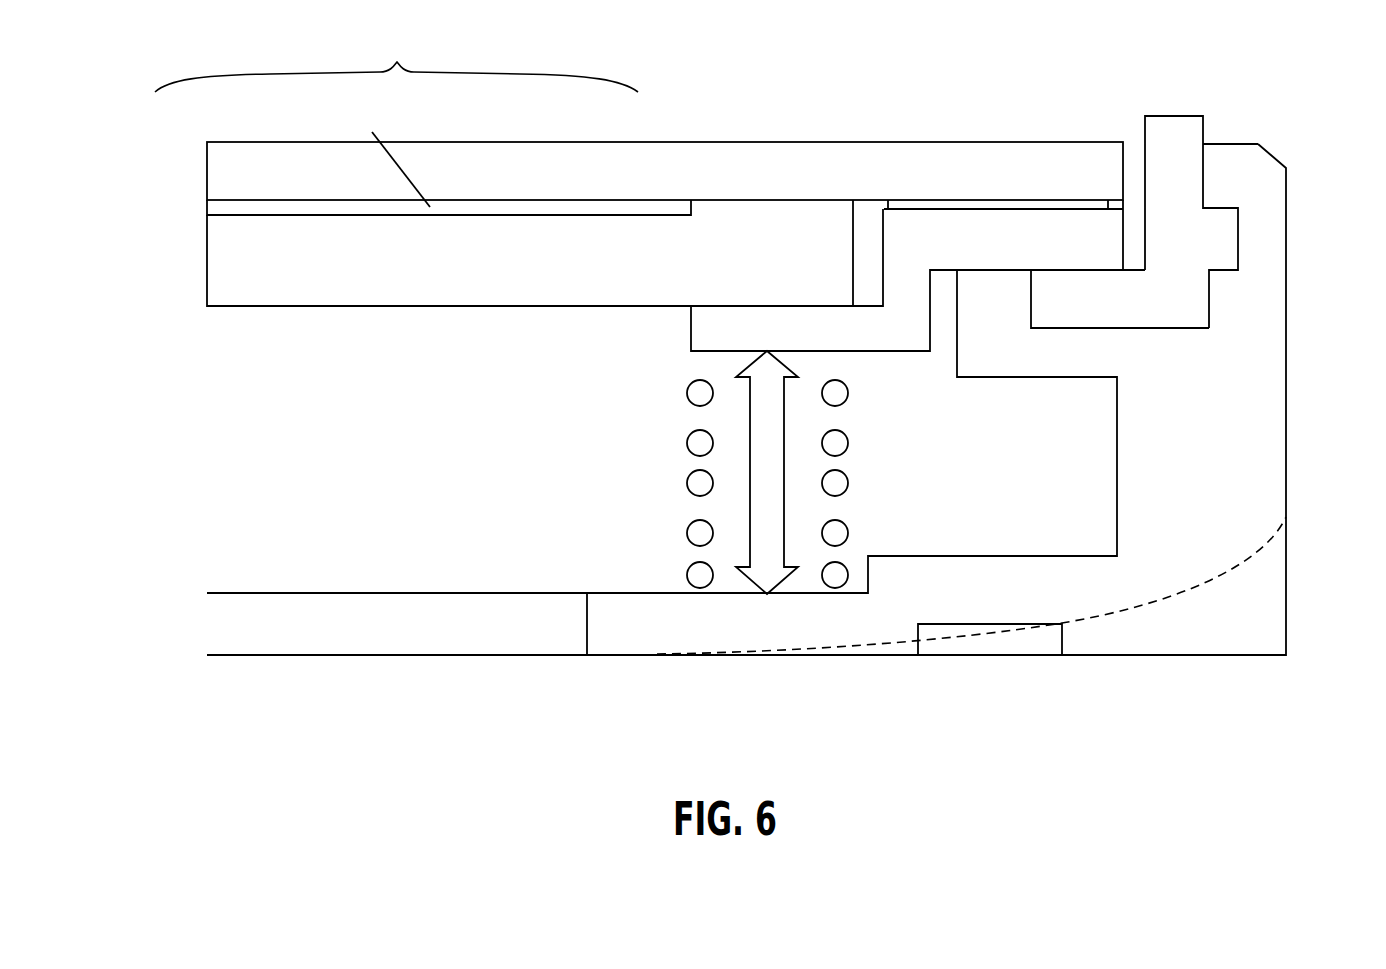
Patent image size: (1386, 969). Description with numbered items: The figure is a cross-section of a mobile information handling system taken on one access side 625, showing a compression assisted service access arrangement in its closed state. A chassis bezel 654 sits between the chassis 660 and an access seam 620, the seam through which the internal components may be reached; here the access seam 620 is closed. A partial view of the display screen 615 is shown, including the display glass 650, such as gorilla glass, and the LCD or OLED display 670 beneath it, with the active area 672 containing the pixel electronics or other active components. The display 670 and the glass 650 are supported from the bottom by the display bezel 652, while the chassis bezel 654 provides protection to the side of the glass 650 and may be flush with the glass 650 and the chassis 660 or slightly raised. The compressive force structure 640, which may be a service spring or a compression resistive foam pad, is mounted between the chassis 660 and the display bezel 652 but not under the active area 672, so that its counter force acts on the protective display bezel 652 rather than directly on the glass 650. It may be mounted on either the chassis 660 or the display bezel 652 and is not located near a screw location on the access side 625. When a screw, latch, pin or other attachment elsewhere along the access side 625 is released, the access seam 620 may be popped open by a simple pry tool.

The display screen 615 is at (396, 119).
The display glass 650 is at (207, 150).
The active area 672 is at (207, 204).
The LCD or OLED display 670 is at (207, 264).
The display bezel 652 is at (1068, 240).
The access seam 620 is at (1132, 133).
The chassis bezel 654 is at (1179, 116).
The access side 625 is at (1286, 450).
The chassis 660 is at (657, 654).
The compressive force structure 640 is at (805, 573).